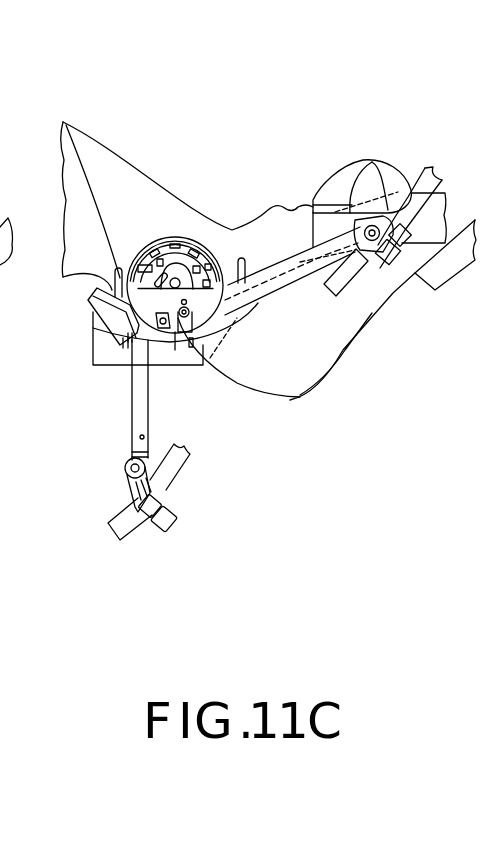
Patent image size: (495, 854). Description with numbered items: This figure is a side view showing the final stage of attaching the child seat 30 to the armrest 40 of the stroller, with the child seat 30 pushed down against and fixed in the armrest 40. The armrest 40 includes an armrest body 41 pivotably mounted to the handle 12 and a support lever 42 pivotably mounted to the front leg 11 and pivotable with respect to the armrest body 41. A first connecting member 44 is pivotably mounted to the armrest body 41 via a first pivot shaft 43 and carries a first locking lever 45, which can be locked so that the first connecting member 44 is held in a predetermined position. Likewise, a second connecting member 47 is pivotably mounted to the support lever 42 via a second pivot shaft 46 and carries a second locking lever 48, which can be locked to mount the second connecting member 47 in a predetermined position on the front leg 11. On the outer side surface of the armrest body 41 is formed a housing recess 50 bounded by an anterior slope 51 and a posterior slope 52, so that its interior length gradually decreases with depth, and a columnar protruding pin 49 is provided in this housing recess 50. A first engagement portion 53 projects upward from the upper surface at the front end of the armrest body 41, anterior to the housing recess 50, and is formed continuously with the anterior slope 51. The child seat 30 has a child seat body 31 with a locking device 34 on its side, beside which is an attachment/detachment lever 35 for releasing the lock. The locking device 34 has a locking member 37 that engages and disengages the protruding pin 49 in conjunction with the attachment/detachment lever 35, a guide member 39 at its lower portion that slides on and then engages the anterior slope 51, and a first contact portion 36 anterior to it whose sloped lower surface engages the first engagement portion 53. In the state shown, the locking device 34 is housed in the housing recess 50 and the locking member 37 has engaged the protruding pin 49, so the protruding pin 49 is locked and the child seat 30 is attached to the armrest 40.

The front leg 11 is at (127, 530).
The handle 12 is at (365, 305).
The child seat 30 is at (272, 133).
The child seat body 31 is at (268, 207).
The locking device 34 is at (143, 240).
The attachment/detachment lever 35 is at (218, 233).
The first contact portion 36 is at (105, 278).
The locking member 37 is at (183, 343).
The guide member 39 is at (152, 333).
The armrest 40 is at (305, 368).
The armrest body 41 is at (290, 285).
The support lever 42 is at (137, 413).
The first pivot shaft 43 is at (353, 200).
The first connecting member 44 is at (370, 200).
The first locking lever 45 is at (397, 263).
The second pivot shaft 46 is at (126, 467).
The second connecting member 47 is at (130, 500).
The second locking lever 48 is at (178, 528).
The protruding pin 49 is at (183, 309).
The housing recess 50 is at (177, 340).
The anterior slope 51 is at (110, 348).
The posterior slope 52 is at (225, 322).
The first engagement portion 53 is at (97, 290).